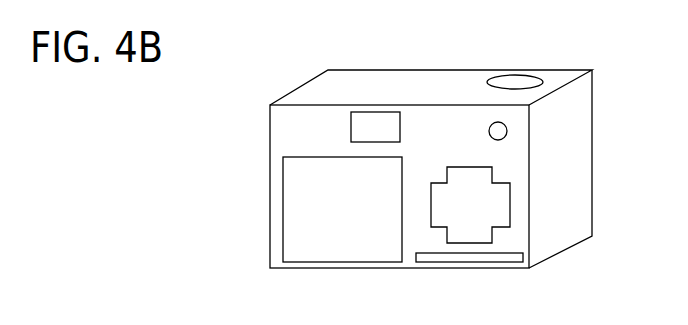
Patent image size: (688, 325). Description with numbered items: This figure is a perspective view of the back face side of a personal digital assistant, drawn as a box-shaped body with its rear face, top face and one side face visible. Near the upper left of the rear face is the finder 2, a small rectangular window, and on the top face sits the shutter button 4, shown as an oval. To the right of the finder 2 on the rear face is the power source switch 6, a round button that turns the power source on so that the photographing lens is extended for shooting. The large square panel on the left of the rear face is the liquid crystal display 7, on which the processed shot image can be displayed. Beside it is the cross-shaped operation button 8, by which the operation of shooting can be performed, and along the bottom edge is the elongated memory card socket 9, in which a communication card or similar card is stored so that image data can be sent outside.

The finder 2 is at (357, 127).
The shutter button 4 is at (516, 78).
The power source switch 6 is at (489, 129).
The liquid crystal display 7 is at (295, 207).
The operation button 8 is at (497, 206).
The memory card socket 9 is at (500, 259).